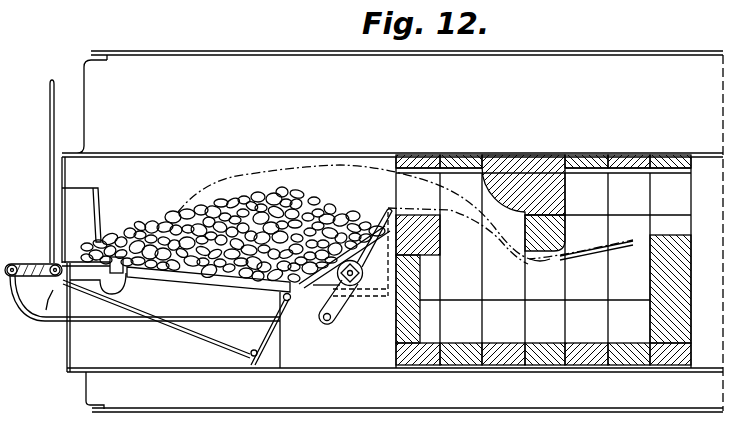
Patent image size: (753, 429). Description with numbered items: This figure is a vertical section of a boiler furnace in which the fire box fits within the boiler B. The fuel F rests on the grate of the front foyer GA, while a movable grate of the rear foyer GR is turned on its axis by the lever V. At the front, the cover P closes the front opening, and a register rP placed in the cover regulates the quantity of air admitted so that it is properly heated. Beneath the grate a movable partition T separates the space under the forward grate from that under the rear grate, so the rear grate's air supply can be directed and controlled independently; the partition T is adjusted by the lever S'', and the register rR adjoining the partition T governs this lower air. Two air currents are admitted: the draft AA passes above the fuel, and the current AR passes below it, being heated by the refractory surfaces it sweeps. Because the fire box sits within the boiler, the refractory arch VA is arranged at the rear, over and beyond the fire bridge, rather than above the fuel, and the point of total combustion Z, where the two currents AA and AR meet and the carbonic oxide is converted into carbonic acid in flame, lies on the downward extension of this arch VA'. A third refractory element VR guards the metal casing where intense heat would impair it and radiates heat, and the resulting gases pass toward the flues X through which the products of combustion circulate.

The lever V is at (49, 117).
The register rP is at (63, 181).
The cover P is at (76, 294).
The lever S'' is at (142, 316).
The grate of the front foyer GA is at (258, 259).
The partition T is at (262, 346).
The register rR is at (280, 342).
The grate of the rear foyer GR is at (338, 302).
The current of air AR is at (394, 292).
The fuel F is at (232, 230).
The draft of air AA is at (234, 186).
The arch VA is at (543, 172).
The refractory element VR is at (493, 246).
The flue X is at (670, 280).
The downward extension of the arch VA' is at (596, 246).
The point of contact Z is at (545, 262).
The boiler B is at (395, 390).